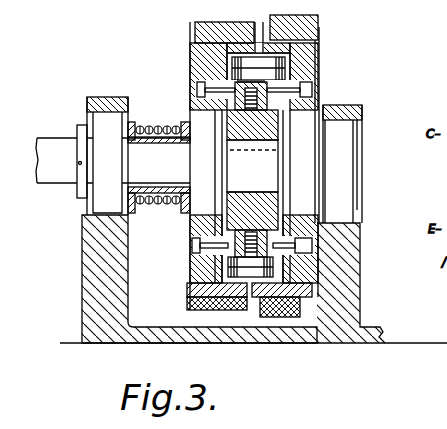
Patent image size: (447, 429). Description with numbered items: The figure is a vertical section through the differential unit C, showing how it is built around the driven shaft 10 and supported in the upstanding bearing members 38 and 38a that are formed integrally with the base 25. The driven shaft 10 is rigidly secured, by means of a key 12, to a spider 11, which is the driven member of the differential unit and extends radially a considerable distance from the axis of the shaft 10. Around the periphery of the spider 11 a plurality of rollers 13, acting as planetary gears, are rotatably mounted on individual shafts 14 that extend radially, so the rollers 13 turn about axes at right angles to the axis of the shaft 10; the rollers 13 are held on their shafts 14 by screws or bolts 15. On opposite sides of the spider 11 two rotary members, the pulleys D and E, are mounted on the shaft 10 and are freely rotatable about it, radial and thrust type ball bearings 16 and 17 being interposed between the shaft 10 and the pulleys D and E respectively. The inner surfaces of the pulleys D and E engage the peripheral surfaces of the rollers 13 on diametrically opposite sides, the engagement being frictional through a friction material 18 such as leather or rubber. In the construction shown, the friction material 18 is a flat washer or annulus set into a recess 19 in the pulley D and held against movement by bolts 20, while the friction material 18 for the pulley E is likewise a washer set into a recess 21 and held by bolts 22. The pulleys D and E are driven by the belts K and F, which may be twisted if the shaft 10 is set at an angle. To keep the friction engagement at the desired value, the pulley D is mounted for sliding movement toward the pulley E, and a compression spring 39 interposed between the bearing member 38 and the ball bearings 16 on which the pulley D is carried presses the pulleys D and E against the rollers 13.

The driven shaft 10 is at (50, 175).
The spider 11 is at (250, 197).
The key 12 is at (243, 146).
The rollers 13 is at (205, 270).
The shafts 14 is at (273, 262).
The screws or bolts 15 is at (290, 280).
The ball bearings 16 is at (186, 216).
The ball bearings 17 is at (320, 183).
The friction material 18 is at (283, 72).
The recess 19 is at (196, 40).
The bolts 20 is at (197, 90).
The recess 21 is at (290, 70).
The bolts 22 is at (315, 90).
The base 25 is at (64, 343).
The bearing member 38 is at (83, 260).
The bearing member 38a is at (348, 306).
The compression spring 39 is at (155, 205).
The differential unit C is at (251, 18).
The pulley D is at (195, 29).
The pulley E is at (318, 50).
The belt K is at (200, 312).
The belt F is at (290, 318).